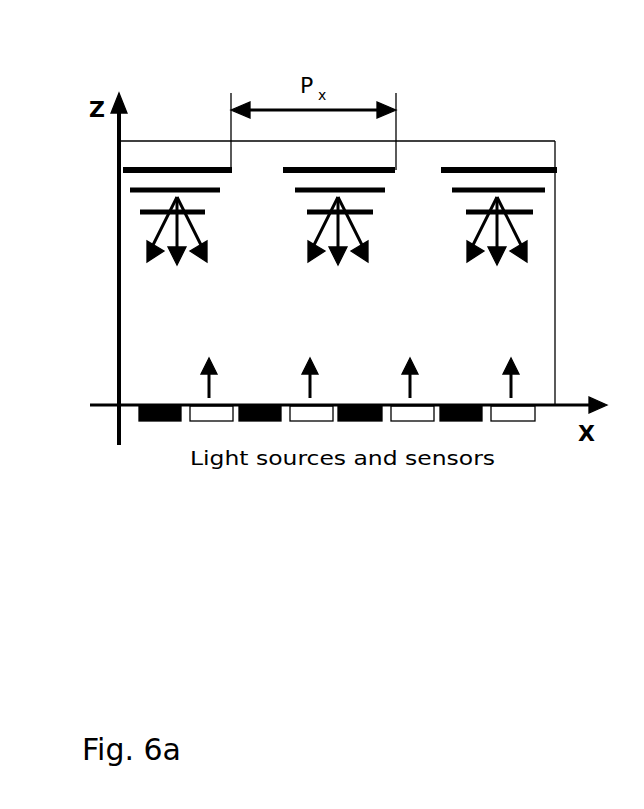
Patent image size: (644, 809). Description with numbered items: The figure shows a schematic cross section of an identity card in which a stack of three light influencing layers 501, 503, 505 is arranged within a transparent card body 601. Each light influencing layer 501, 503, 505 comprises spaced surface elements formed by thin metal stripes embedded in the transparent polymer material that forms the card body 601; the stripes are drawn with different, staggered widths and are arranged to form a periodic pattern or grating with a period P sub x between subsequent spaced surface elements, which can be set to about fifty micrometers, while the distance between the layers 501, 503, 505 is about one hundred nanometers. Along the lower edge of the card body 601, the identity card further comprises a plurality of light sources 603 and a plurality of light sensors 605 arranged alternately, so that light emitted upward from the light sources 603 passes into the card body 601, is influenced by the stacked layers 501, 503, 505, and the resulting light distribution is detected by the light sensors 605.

The light influencing layer 501 is at (106, 166).
The light influencing layer 503 is at (117, 190).
The light influencing layer 505 is at (128, 212).
The transparent card body 601 is at (520, 153).
The light source 603 is at (518, 424).
The light sensor 605 is at (150, 422).